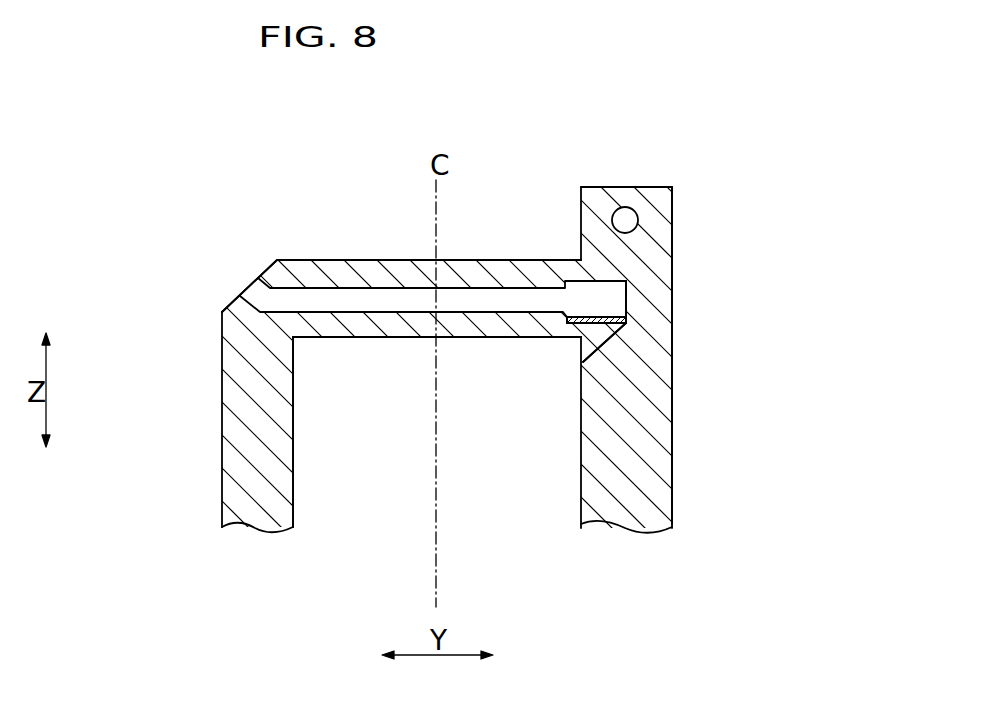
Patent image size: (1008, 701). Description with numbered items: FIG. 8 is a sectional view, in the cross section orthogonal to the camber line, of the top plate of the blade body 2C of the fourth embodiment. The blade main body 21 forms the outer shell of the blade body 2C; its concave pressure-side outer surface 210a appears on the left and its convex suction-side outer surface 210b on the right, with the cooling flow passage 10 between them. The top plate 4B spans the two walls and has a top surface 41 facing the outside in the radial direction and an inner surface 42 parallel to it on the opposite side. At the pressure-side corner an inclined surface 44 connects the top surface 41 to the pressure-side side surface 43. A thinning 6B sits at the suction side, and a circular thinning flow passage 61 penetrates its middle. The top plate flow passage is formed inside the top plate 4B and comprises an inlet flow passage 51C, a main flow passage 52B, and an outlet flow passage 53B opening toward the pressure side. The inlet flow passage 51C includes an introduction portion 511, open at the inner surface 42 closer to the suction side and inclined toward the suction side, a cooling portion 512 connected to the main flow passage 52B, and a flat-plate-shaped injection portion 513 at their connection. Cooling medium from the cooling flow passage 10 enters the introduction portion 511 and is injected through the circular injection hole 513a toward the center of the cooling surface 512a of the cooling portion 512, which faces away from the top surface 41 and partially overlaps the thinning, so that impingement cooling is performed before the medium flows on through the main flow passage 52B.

The blade body 2C is at (700, 142).
The top plate 4B is at (352, 258).
The top surface 41 is at (528, 259).
The inner surface 42 is at (337, 338).
The side surface 43 is at (672, 290).
The inclined surface 44 is at (235, 297).
The outlet flow passage 53B is at (258, 283).
The main flow passage 52B is at (475, 290).
The inlet flow passage 51C is at (562, 337).
The cooling portion 512 is at (616, 298).
The cooling surface 512a is at (608, 290).
The injection portion 513 is at (627, 320).
The injection hole 513a is at (597, 331).
The introduction portion 511 is at (590, 365).
The thinning flow passage 61 is at (628, 216).
The thinning 6B is at (673, 212).
The pressure-side outer surface 210a is at (222, 472).
The suction-side outer surface 210b is at (672, 490).
The cooling flow passage 10 is at (293, 513).
The blade main body 21 is at (228, 513).